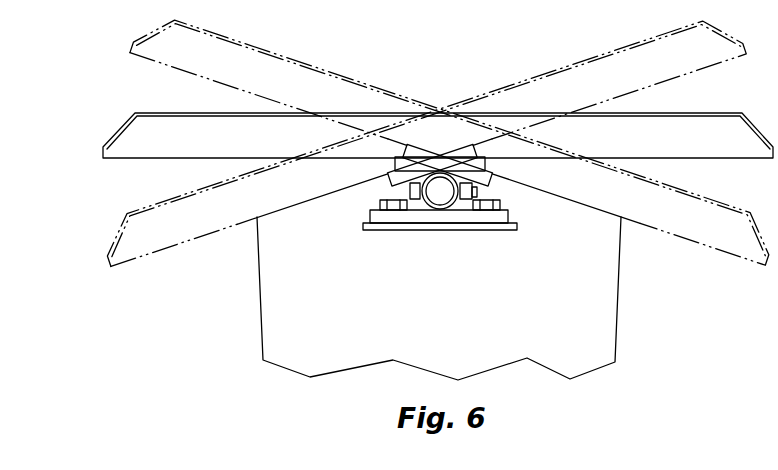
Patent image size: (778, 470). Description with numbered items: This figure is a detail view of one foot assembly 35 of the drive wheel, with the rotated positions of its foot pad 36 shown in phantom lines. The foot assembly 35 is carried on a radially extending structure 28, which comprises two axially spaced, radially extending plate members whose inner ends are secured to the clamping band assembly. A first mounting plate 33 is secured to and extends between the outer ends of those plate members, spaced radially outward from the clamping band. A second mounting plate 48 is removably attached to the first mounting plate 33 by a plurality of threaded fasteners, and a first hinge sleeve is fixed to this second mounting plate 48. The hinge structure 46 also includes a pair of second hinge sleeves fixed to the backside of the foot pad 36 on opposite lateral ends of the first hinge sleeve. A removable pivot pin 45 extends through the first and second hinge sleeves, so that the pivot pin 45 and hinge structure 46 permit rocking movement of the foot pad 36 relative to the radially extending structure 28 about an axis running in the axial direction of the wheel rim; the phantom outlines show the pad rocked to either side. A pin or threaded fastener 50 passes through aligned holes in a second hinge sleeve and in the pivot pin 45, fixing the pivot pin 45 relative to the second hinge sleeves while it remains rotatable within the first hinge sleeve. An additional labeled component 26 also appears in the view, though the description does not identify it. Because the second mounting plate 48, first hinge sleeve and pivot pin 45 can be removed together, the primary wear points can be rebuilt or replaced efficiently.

The tilting plate assembly 26 is at (315, 5).
The radially extending structure 28 is at (555, 325).
The first mounting plate 33 is at (407, 227).
The foot assembly 35 is at (442, 132).
The foot pad 36 is at (142, 127).
The pivot pin 45 is at (447, 195).
The hinge structure 46 is at (438, 205).
The second mounting plate 48 is at (380, 218).
The threaded fastener 50 is at (478, 190).